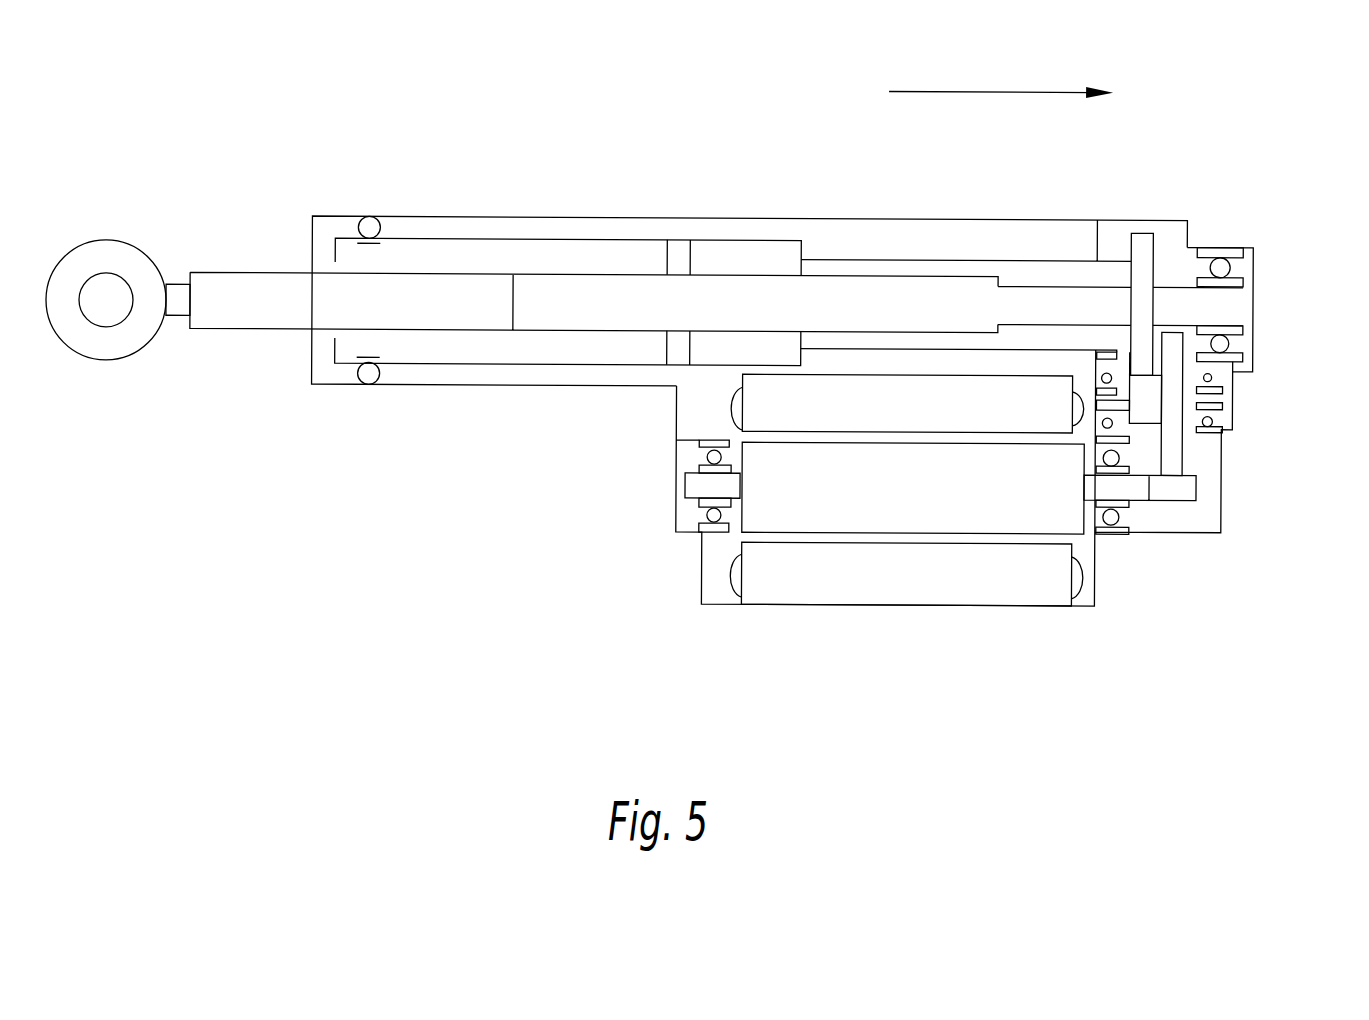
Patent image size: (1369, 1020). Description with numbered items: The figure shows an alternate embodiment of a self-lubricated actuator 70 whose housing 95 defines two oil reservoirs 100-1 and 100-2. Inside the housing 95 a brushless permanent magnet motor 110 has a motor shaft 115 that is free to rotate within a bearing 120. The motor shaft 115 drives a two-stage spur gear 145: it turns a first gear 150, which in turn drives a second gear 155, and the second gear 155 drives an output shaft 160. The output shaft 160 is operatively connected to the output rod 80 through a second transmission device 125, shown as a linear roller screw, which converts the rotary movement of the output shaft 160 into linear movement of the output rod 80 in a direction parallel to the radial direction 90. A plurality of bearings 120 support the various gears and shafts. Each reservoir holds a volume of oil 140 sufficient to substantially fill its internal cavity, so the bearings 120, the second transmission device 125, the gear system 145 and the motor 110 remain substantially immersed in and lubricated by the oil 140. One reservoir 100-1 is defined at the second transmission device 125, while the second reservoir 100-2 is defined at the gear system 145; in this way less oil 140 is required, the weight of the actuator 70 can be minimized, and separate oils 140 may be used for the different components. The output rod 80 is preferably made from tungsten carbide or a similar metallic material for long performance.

The actuator 70 is at (380, 168).
The output rod 80 is at (258, 330).
The radial direction 90 is at (1006, 88).
The housing 95 is at (661, 216).
The oil reservoir 100-1 is at (532, 255).
The oil reservoir 100-2 is at (1198, 518).
The brushless permanent magnet motor 110 is at (885, 512).
The motor shaft 115 is at (1165, 486).
The bearing 120 is at (1220, 263).
The second transmission device 125 is at (706, 364).
The oil 140 is at (965, 233).
The two-stage spur gear 145 is at (1180, 251).
The first gear 150 is at (1178, 437).
The second gear 155 is at (1142, 241).
The output shaft 160 is at (1040, 301).